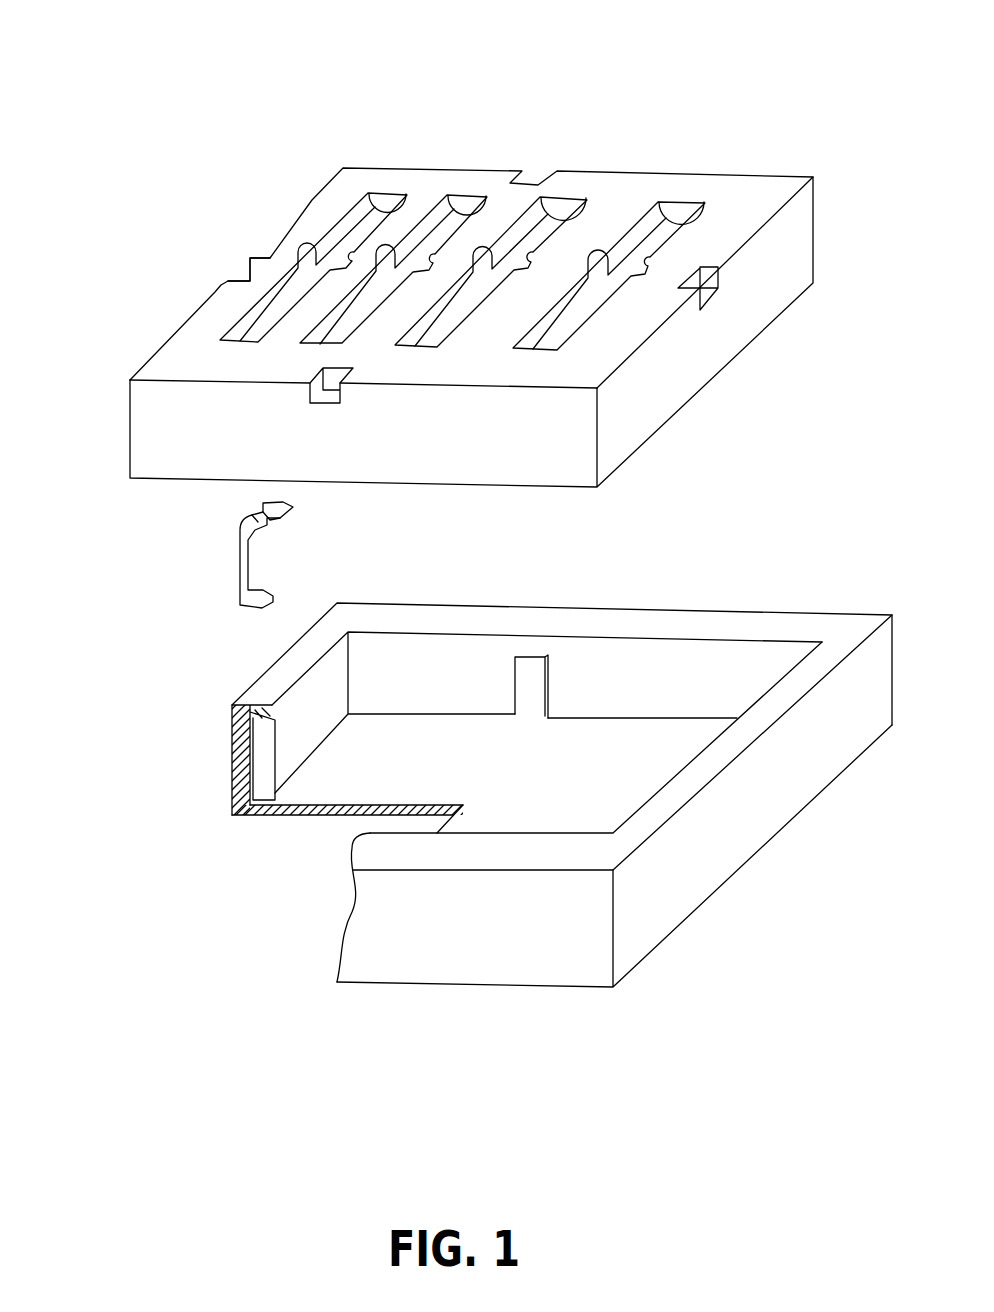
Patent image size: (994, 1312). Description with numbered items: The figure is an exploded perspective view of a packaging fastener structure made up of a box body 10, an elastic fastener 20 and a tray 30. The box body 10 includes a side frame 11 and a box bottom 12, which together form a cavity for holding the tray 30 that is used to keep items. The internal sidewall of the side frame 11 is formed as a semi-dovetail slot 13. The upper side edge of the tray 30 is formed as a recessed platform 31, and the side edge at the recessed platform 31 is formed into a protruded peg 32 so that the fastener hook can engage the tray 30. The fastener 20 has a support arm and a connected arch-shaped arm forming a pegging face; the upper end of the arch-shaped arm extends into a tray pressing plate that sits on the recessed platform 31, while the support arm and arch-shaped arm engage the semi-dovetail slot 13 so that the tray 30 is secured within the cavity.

The box body 10 is at (427, 948).
The side frame 11 is at (272, 684).
The box bottom 12 is at (452, 817).
The semi-dovetail slot 13 is at (530, 692).
The fastener 20 is at (222, 562).
The tray 30 is at (203, 422).
The recessed platform 31 is at (318, 385).
The protruded peg 32 is at (445, 222).